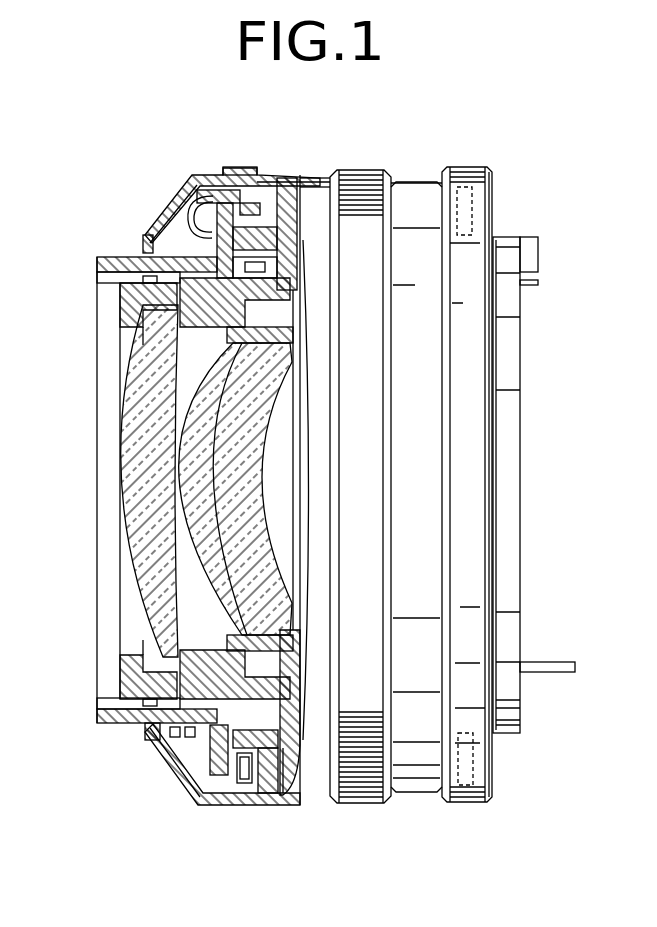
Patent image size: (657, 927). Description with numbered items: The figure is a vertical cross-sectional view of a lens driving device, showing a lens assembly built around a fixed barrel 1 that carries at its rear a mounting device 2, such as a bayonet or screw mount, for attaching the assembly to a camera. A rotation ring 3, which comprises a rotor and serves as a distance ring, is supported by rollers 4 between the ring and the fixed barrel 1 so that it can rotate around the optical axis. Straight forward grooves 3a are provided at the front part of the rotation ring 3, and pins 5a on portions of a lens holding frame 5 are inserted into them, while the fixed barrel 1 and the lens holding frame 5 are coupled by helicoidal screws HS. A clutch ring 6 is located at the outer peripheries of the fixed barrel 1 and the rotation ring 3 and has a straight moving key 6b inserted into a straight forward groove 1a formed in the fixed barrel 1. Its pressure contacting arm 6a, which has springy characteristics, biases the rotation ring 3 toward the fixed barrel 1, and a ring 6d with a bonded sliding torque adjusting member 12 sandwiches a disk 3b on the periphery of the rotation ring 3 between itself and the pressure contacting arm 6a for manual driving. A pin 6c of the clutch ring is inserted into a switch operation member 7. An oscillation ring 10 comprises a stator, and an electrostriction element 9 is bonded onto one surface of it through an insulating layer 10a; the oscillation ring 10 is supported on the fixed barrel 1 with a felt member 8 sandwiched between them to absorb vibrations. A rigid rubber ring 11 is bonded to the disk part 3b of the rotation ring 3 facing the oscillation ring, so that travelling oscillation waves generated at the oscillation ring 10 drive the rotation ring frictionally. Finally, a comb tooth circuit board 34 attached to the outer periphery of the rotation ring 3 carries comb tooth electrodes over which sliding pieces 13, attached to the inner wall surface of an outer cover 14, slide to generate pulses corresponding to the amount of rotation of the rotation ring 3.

The fixed barrel 1 is at (323, 213).
The straight forward groove 1a is at (302, 192).
The mounting device 2 is at (493, 218).
The rotation ring 3 is at (108, 262).
The straight forward grooves 3a is at (100, 285).
The disk 3b is at (212, 198).
The rollers 4 is at (187, 277).
The lens holding frame 5 is at (130, 307).
The pins 5a is at (133, 278).
The clutch ring 6 is at (193, 247).
The pressure contacting arm 6a is at (193, 183).
The straight moving key 6b is at (292, 178).
The pin 6c is at (222, 176).
The ring 6d is at (266, 190).
The switch operation member 7 is at (240, 167).
The felt member 8 is at (300, 787).
The electrostriction element 9 is at (290, 790).
The oscillation ring 10 is at (260, 748).
The insulating layer 10a is at (273, 748).
The rigid rubber ring 11 is at (223, 775).
The sliding torque adjusting member 12 is at (222, 203).
The sliding pieces 13 is at (167, 767).
The outer cover 14 is at (177, 783).
The comb tooth circuit board 34 is at (157, 753).
The helicoidal screws HS is at (155, 247).